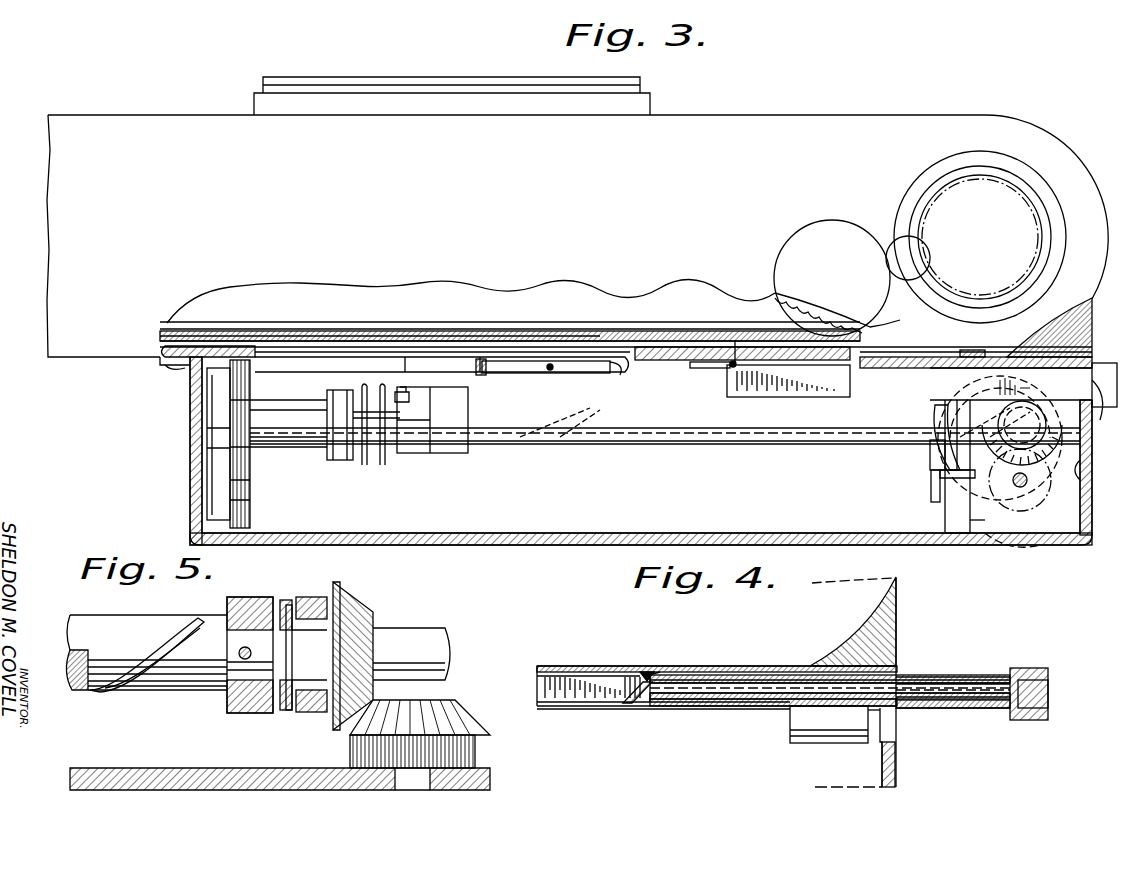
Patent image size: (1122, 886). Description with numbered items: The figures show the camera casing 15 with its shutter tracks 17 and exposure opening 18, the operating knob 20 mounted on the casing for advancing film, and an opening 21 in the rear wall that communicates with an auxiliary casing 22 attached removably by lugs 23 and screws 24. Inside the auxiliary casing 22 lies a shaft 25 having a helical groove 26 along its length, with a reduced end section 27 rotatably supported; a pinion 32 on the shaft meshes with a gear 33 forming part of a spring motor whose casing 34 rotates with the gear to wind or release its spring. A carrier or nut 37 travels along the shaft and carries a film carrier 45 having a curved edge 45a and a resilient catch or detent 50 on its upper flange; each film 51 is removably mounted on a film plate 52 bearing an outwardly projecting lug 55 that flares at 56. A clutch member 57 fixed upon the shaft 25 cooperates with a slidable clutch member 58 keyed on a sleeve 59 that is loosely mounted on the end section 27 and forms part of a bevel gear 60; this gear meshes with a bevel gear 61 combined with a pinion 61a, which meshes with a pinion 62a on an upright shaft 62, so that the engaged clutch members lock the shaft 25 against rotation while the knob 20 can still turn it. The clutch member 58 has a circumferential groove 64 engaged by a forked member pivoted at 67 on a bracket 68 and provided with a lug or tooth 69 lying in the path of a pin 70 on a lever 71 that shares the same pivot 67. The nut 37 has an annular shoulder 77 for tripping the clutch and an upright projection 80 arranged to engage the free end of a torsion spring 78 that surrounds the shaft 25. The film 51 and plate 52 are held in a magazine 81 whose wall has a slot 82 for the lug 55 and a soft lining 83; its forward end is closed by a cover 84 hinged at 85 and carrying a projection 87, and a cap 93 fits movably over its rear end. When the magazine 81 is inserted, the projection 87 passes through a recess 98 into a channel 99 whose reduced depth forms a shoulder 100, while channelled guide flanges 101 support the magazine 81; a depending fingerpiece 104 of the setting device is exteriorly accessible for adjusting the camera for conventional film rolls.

In FIG. 3, the casing 15 is at (893, 128).
In FIG. 3, the shutter tracks 17 is at (633, 337).
In FIG. 3, the exposure opening 18 is at (590, 333).
In FIG. 3, the operating knob 20 is at (980, 237).
In FIG. 3, the opening 21 is at (256, 352).
In FIG. 3, the auxiliary casing 22 is at (192, 438).
In FIG. 3, the lugs 23 is at (168, 360).
In FIG. 3, the screws 24 is at (183, 368).
In FIG. 5, the shaft 25 is at (98, 626).
In FIG. 5, the helical groove 26 is at (180, 627).
In FIG. 5, the reduced end section 27 is at (425, 641).
In FIG. 3, the pinion 32 is at (258, 448).
In FIG. 3, the gear 33 is at (241, 501).
In FIG. 3, the casing 34 is at (215, 490).
In FIG. 3, the carrier or nut 37 is at (460, 455).
In FIG. 3, the film carrier 45 is at (320, 359).
In FIG. 3, the curved edge 45a is at (622, 366).
In FIG. 3, the resilient catch or detent 50 is at (520, 373).
In FIG. 3, the film 51 is at (440, 346).
In FIG. 4, the film 51 is at (740, 681).
In FIG. 3, the film plate 52 is at (375, 341).
In FIG. 4, the film plate 52 is at (688, 709).
In FIG. 3, the lug 55 is at (481, 374).
In FIG. 4, the lug 55 is at (805, 718).
In FIG. 4, the flaring portion 56 is at (830, 737).
In FIG. 5, the clutch member 57 is at (226, 712).
In FIG. 5, the clutch member 58 is at (318, 600).
In FIG. 5, the sleeve 59 is at (280, 714).
In FIG. 3, the bevel gear 60 is at (1005, 406).
In FIG. 5, the bevel gear 60 is at (355, 612).
In FIG. 3, the bevel gear 61 is at (1088, 471).
In FIG. 5, the bevel gear 61 is at (478, 719).
In FIG. 5, the pinion 61a is at (470, 756).
In FIG. 3, the upright shaft 62 is at (1035, 488).
In FIG. 3, the pinion 62a is at (1053, 546).
In FIG. 5, the circumferential groove 64 is at (298, 713).
In FIG. 3, the pivot 67 is at (953, 481).
In FIG. 3, the bracket 68 is at (975, 523).
In FIG. 3, the lug or tooth 69 is at (938, 466).
In FIG. 3, the pin 70 is at (985, 478).
In FIG. 3, the lever 71 is at (940, 442).
In FIG. 3, the annular shoulder 77 is at (398, 456).
In FIG. 3, the torsion spring 78 is at (365, 466).
In FIG. 3, the upright projection 80 is at (400, 394).
In FIG. 3, the magazine 81 is at (1023, 385).
In FIG. 4, the magazine 81 is at (965, 683).
In FIG. 4, the slot 82 is at (737, 708).
In FIG. 4, the lining 83 is at (910, 684).
In FIG. 3, the cover 84 is at (695, 369).
In FIG. 4, the cover 84 is at (632, 706).
In FIG. 3, the hinge 85 is at (732, 367).
In FIG. 4, the hinge 85 is at (645, 675).
In FIG. 3, the lug or projection 87 is at (736, 361).
In FIG. 4, the lug or projection 87 is at (656, 674).
In FIG. 3, the cap 93 is at (1100, 422).
In FIG. 4, the cap 93 is at (1028, 671).
In FIG. 4, the recess 98 is at (896, 672).
In FIG. 3, the channel 99 is at (1045, 346).
In FIG. 4, the channel 99 is at (775, 676).
In FIG. 3, the shoulder 100 is at (788, 381).
In FIG. 4, the shoulder 100 is at (650, 674).
In FIG. 4, the channelled guide flanges 101 is at (586, 702).
In FIG. 3, the fingerpiece 104 is at (932, 486).